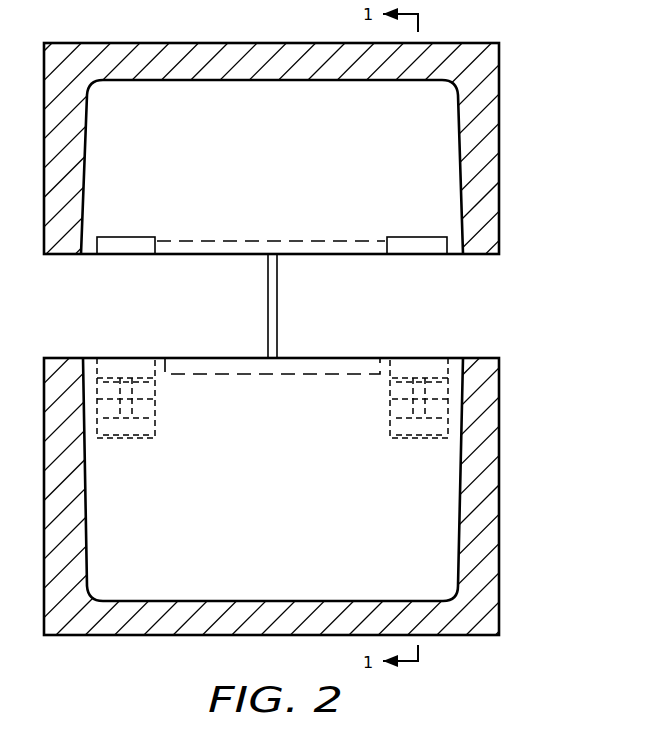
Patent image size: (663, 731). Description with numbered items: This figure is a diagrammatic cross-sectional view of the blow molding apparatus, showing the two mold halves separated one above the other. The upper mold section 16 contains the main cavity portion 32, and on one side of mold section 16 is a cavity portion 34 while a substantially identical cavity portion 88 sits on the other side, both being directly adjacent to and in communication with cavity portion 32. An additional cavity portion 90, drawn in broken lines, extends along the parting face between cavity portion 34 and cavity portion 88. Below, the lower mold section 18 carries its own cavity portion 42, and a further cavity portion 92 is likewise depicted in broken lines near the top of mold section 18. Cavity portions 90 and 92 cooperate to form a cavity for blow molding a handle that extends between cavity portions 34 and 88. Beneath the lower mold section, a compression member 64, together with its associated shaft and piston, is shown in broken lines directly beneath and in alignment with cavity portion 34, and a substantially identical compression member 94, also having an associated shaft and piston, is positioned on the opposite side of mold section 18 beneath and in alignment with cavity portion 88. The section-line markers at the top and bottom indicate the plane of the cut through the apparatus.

The mold section 16 is at (499, 68).
The mold section 18 is at (499, 548).
The cavity portion 32 is at (261, 172).
The cavity portion 42 is at (259, 530).
The cavity portion 34 is at (404, 244).
The cavity portion 88 is at (136, 244).
The cavity portion 90 is at (285, 241).
The cavity portion 92 is at (281, 377).
The compression member 94 is at (132, 358).
The compression member 64 is at (432, 358).